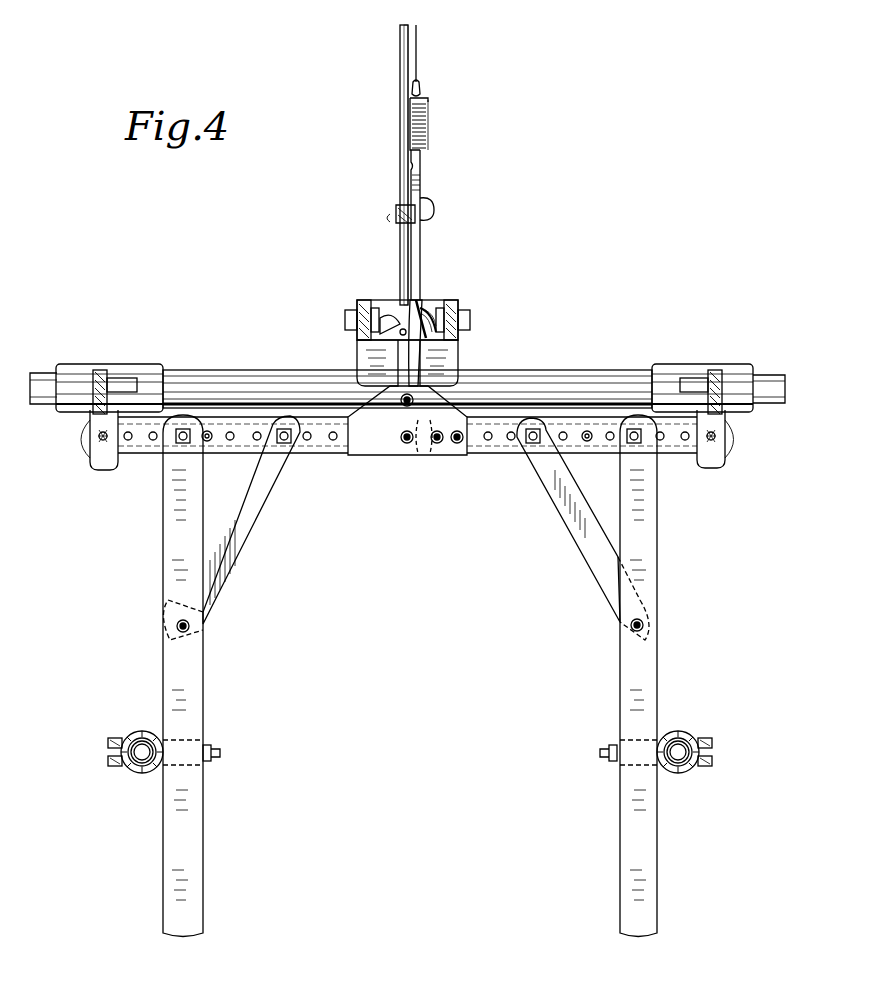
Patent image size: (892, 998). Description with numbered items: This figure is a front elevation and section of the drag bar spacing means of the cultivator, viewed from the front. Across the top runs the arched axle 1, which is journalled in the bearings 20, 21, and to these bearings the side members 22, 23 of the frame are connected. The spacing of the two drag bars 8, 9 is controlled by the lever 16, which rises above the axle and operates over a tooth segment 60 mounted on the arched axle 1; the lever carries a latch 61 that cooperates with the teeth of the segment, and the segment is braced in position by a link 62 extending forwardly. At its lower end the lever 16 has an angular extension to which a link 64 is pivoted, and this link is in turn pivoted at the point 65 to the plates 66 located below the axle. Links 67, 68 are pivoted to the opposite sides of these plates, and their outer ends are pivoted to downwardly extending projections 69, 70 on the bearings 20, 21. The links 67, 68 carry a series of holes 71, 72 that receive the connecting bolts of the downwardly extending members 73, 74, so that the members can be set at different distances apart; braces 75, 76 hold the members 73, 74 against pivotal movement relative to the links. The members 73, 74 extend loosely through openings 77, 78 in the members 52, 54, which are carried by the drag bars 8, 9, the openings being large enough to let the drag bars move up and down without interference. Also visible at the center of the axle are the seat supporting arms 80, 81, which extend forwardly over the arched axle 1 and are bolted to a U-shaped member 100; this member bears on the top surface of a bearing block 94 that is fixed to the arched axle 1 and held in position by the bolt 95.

The arched axle 1 is at (247, 385).
The drag bar 8 is at (138, 772).
The drag bar 9 is at (686, 773).
The lever 16 is at (401, 70).
The bearing 20 is at (104, 371).
The bearing 21 is at (668, 382).
The side member 22 is at (112, 376).
The side member 23 is at (714, 372).
The member 52 is at (147, 733).
The member 54 is at (688, 733).
The tooth segment 60 is at (421, 180).
The latch 61 is at (427, 142).
The link 62 is at (430, 208).
The link 64 is at (398, 320).
The pivot point 65 is at (412, 396).
The plates 66 is at (376, 447).
The link 67 is at (325, 447).
The link 68 is at (508, 447).
The projection 69 is at (106, 460).
The projection 70 is at (712, 462).
The series of holes 71 is at (208, 442).
The series of holes 72 is at (588, 442).
The downwardly extending member 73 is at (176, 556).
The downwardly extending member 74 is at (642, 540).
The brace 75 is at (246, 520).
The brace 76 is at (582, 532).
The opening 77 is at (210, 762).
The opening 78 is at (615, 745).
The seat supporting arm 80 is at (372, 312).
The seat supporting arm 81 is at (456, 302).
The bearing block 94 is at (372, 356).
The bolt 95 is at (355, 320).
The U-shaped member 100 is at (438, 302).